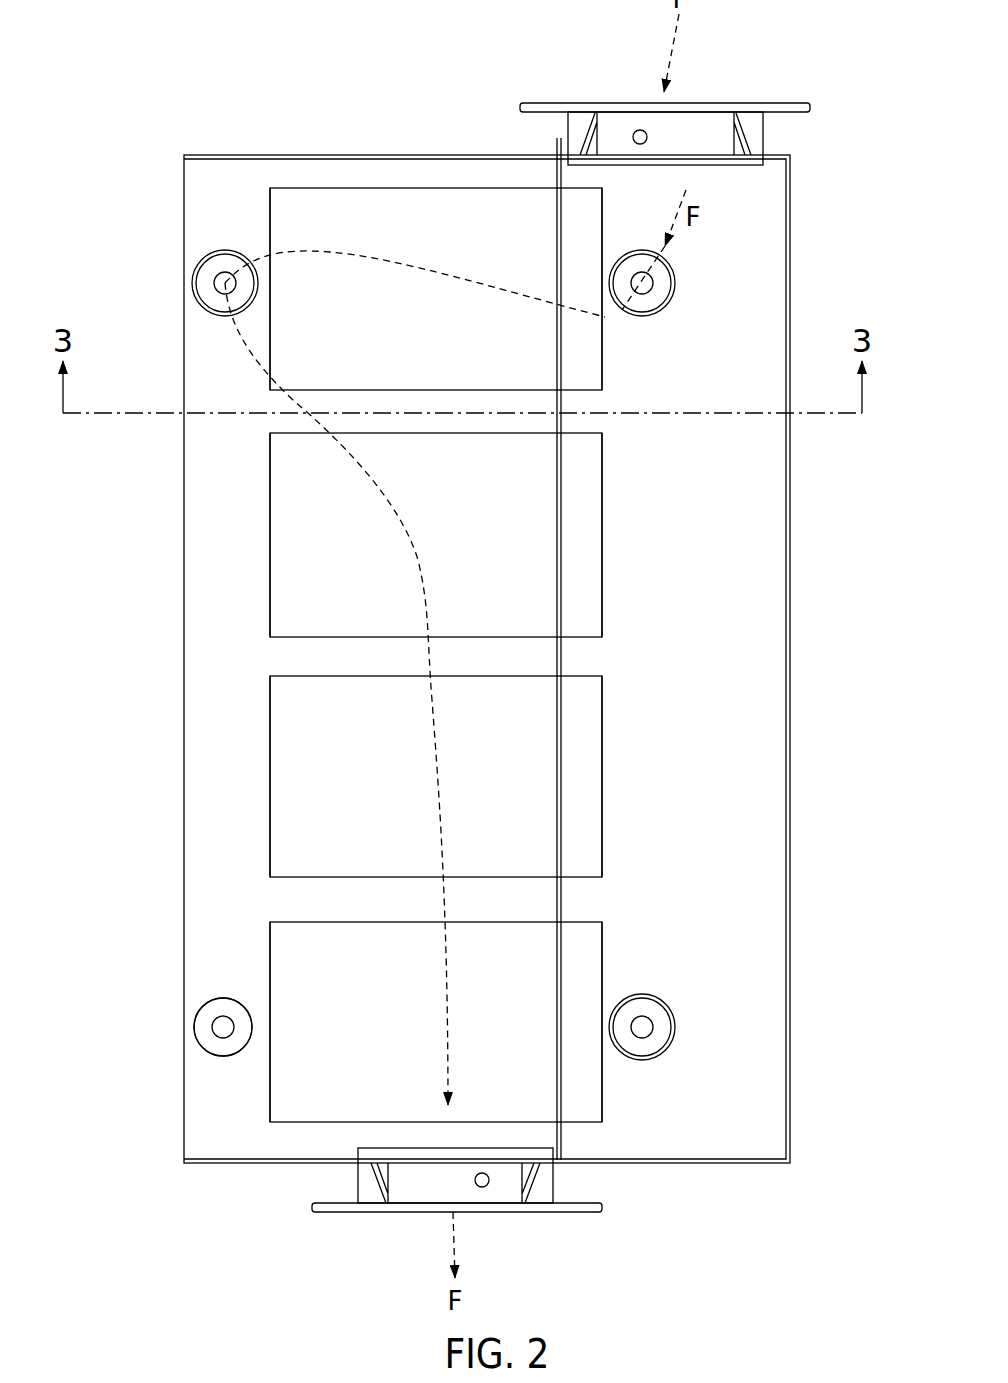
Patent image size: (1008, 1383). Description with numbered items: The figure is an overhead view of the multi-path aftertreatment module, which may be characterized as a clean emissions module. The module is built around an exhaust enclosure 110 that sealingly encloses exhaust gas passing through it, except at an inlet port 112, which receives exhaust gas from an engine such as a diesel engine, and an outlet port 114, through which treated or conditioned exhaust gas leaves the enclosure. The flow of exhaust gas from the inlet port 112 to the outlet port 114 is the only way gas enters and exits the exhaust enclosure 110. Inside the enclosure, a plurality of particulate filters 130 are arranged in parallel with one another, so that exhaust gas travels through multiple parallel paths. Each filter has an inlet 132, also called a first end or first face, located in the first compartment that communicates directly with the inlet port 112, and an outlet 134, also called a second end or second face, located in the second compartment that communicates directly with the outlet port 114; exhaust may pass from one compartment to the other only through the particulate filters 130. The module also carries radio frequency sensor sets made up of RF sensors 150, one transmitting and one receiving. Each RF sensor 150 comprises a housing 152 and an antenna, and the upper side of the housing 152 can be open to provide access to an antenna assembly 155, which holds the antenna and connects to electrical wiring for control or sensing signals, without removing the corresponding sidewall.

The exhaust enclosure 110 is at (790, 1137).
The inlet port 112 is at (748, 118).
The outlet port 114 is at (340, 1211).
The particulate filter 130 is at (383, 213).
The inlet of particulate filter 132 is at (602, 358).
The outlet of particulate filter 134 is at (269, 212).
The RF sensor 150 is at (191, 283).
The housing 152 is at (195, 303).
The antenna assembly 155 is at (220, 280).